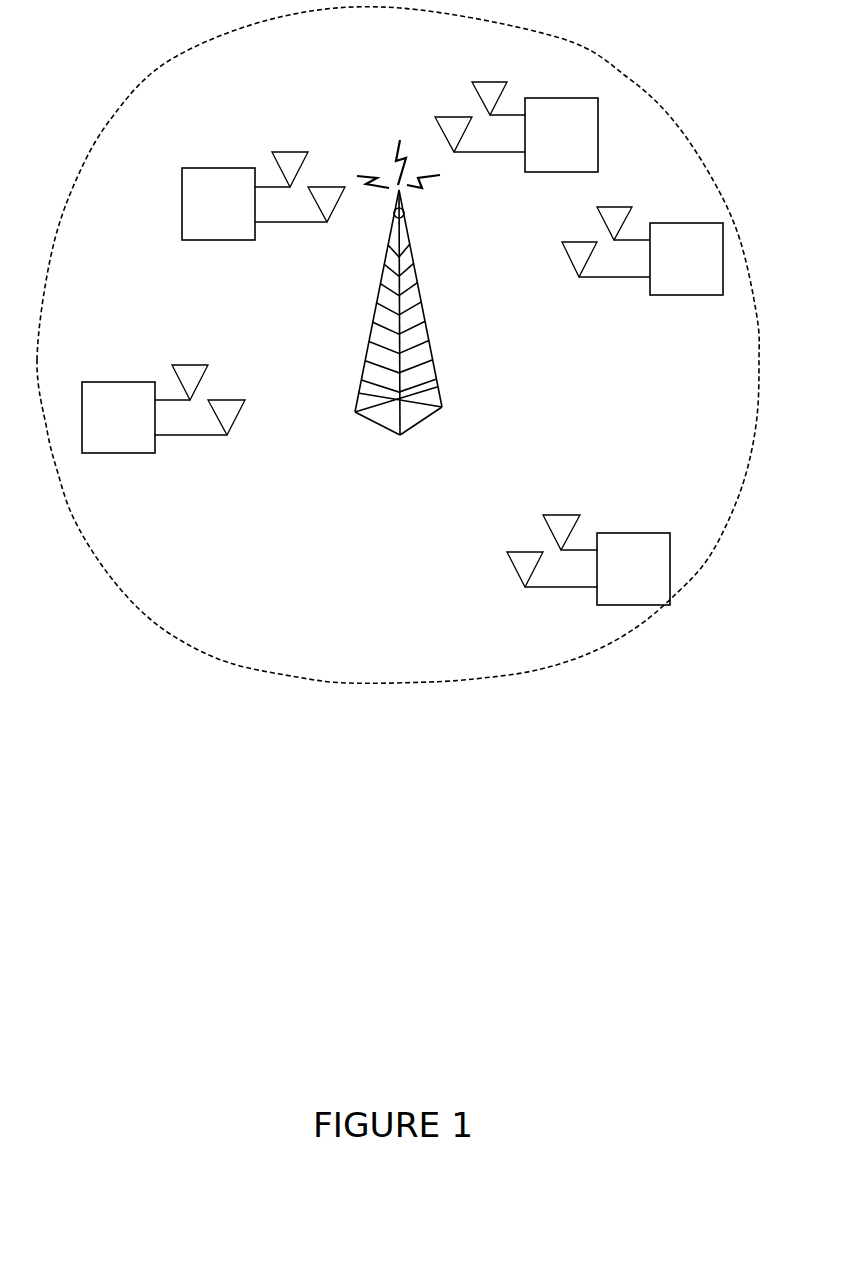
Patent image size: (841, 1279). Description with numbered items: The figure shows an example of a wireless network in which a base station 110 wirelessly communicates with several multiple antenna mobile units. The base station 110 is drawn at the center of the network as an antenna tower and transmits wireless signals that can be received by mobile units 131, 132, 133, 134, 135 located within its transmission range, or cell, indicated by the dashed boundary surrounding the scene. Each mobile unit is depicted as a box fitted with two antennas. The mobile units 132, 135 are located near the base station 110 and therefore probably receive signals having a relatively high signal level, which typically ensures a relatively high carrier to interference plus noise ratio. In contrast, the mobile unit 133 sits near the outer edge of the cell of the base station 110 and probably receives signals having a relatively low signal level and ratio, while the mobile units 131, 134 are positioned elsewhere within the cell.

The base station 110 is at (417, 390).
The mobile unit 131 is at (666, 283).
The mobile unit 132 is at (541, 160).
The mobile unit 133 is at (613, 594).
The mobile unit 134 is at (98, 441).
The mobile unit 135 is at (198, 228).